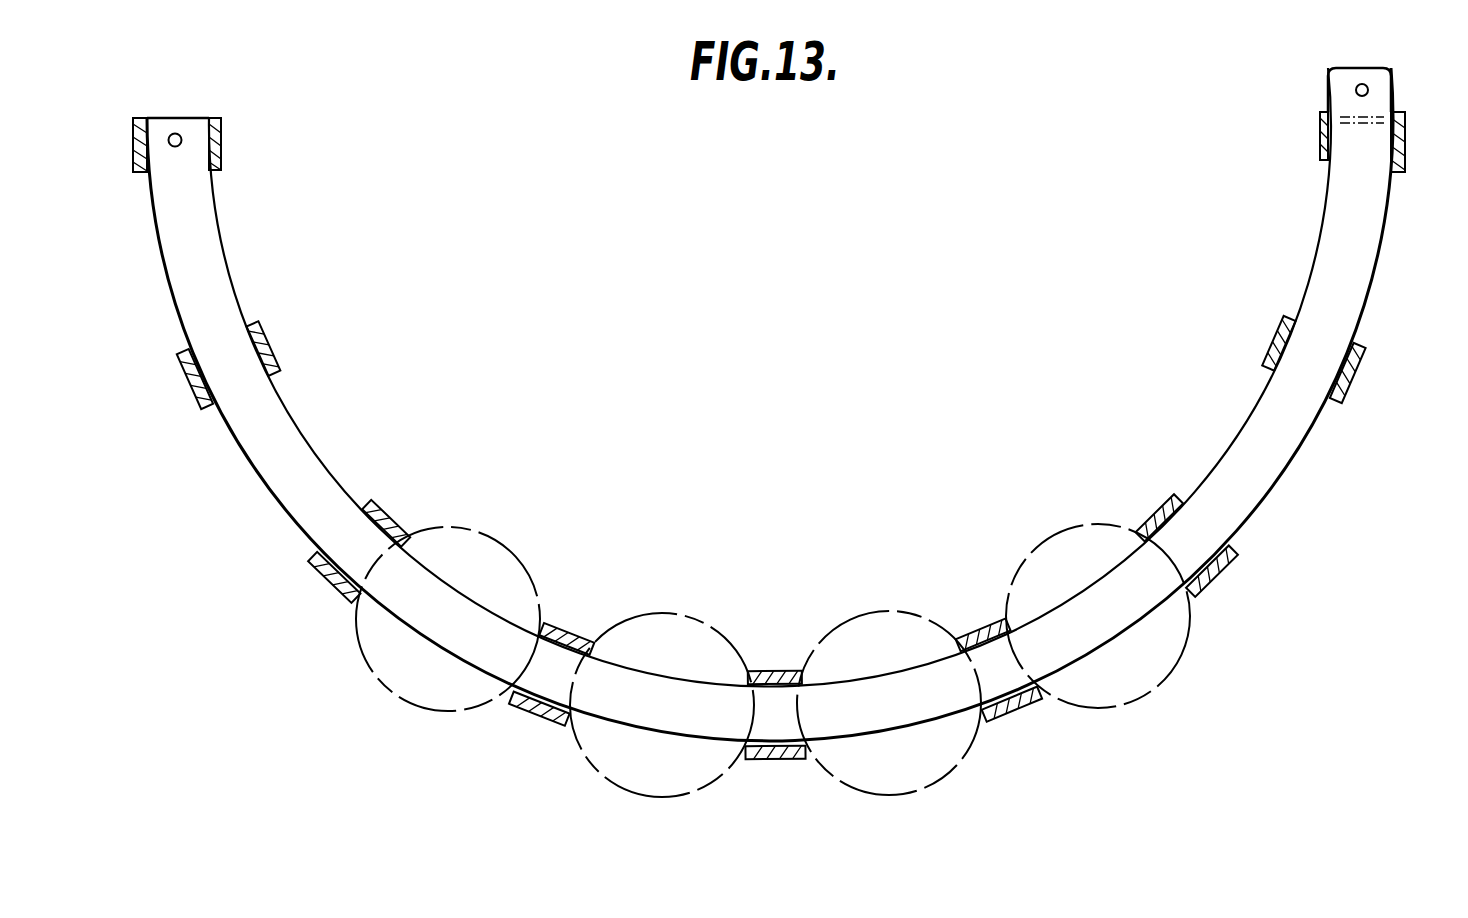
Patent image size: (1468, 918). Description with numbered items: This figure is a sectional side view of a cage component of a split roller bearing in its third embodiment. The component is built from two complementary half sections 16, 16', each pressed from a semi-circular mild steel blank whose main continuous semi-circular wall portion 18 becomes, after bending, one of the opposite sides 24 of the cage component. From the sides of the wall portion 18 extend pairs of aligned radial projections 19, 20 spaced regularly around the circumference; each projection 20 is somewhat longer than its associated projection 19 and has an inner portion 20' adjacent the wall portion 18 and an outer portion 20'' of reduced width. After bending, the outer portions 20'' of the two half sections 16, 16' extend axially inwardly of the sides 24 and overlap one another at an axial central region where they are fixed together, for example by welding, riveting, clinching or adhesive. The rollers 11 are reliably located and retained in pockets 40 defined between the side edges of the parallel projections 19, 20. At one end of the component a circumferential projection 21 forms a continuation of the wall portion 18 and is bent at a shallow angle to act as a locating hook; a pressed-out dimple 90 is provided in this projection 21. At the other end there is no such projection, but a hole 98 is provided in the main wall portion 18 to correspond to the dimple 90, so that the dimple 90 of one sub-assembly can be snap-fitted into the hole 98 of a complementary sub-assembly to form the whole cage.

The rollers 11 is at (670, 632).
The half section 16 is at (770, 404).
The half section 16' is at (770, 404).
The main continuous semi-circular wall portion 18 is at (801, 404).
The radial projection 19 is at (1362, 362).
The radial projection 20 is at (771, 498).
The inner portion of projection 20' is at (1081, 494).
The outer portion of projection 20'' is at (1081, 494).
The circumferential projection 21 is at (1358, 107).
The sides of the cage component 24 is at (272, 418).
The pocket 40 is at (957, 640).
The pressed-out dimple 90 is at (1367, 87).
The hole 98 is at (179, 133).